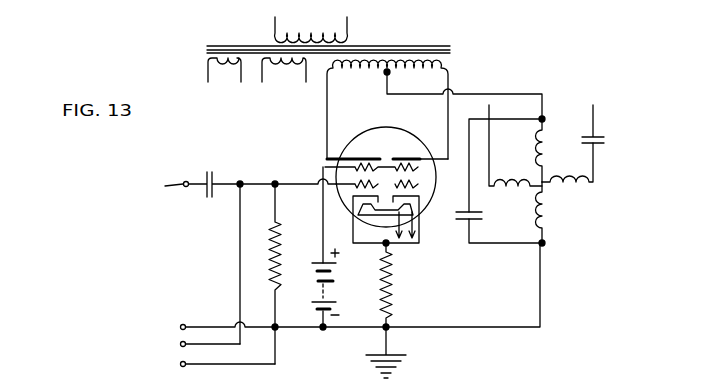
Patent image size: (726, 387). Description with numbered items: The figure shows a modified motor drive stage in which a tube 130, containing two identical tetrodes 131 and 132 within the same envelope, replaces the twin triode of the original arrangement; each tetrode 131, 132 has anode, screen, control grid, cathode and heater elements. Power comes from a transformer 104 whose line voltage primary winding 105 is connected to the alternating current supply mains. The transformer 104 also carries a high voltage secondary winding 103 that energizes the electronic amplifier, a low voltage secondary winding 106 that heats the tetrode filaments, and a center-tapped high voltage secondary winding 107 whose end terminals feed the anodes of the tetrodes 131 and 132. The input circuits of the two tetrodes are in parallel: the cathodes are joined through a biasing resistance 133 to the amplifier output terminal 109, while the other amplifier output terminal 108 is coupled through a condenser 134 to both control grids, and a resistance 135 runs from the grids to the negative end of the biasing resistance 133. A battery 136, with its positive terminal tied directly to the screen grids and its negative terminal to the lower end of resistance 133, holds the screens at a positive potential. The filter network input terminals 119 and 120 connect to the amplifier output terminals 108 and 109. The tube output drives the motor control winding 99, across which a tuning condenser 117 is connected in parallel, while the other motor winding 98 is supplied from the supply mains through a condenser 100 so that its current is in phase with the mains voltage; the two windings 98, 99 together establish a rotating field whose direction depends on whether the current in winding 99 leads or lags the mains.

The winding 98 is at (583, 176).
The winding 99 is at (536, 204).
The condenser 100 is at (607, 141).
The high voltage secondary winding 103 is at (289, 70).
The transformer 104 is at (243, 46).
The line voltage primary winding 105 is at (305, 36).
The low voltage secondary winding 106 is at (227, 70).
The high voltage secondary winding 107 is at (386, 76).
The output terminal 108 is at (160, 185).
The output terminal 109 is at (181, 324).
The tuning condenser 117 is at (459, 217).
The input terminal 119 is at (181, 342).
The input terminal 120 is at (181, 362).
The tube 130 is at (396, 105).
The tetrode 131 is at (372, 156).
The tetrode 132 is at (407, 156).
The biasing resistance 133 is at (393, 271).
The condenser 134 is at (208, 168).
The resistance 135 is at (283, 246).
The battery 136 is at (331, 294).